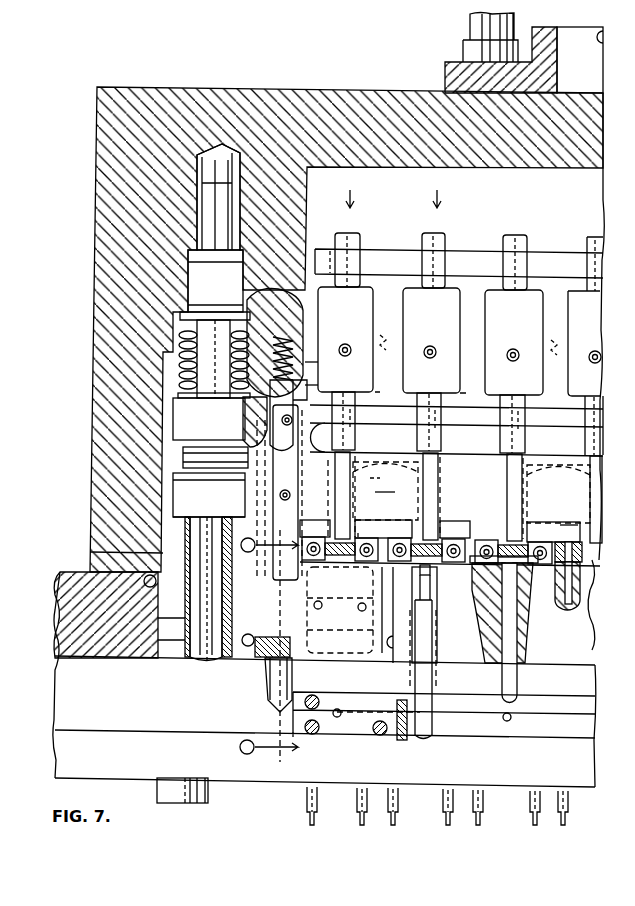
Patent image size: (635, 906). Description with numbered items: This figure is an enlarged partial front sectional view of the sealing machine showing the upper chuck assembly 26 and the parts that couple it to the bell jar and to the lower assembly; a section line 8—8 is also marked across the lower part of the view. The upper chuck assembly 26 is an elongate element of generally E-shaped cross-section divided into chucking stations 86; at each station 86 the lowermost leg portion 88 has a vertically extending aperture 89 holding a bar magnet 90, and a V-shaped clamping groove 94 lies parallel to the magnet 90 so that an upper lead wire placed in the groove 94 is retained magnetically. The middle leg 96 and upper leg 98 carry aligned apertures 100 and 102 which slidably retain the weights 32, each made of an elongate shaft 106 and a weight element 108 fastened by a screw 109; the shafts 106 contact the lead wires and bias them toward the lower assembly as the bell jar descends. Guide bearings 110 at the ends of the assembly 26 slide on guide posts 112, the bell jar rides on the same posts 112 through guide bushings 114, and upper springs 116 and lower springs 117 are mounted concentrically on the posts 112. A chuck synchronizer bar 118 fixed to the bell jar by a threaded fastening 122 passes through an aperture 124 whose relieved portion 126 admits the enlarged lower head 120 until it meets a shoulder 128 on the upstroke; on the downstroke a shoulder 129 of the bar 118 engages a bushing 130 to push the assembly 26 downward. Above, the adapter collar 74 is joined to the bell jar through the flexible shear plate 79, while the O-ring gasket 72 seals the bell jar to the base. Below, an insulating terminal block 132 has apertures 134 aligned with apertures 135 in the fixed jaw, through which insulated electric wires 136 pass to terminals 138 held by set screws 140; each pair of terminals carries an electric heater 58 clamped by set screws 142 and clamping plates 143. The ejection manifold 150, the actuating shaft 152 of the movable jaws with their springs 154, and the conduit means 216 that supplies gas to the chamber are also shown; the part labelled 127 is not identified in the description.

The section line 8- 8 is at (269, 646).
The upper chuck assembly 26 is at (385, 482).
The weights 32 is at (553, 338).
The electric heaters 58 is at (360, 538).
The O-ring gasket 72 is at (155, 585).
The adapter collar 74 is at (558, 72).
The flexible shear plate 79 is at (445, 90).
The chucking stations 86 is at (392, 188).
The lowermost leg portion 88 is at (368, 455).
The vertically extending aperture 89 is at (389, 466).
The bar magnet 90 is at (471, 491).
The V-shaped clamping groove 94 is at (336, 491).
The middle leg 96 is at (460, 414).
The upper leg 98 is at (462, 262).
The apertures 100 is at (355, 413).
The apertures 102 is at (365, 262).
The elongate shaft 106 is at (350, 232).
The weight element 108 is at (462, 388).
The screw 109 is at (594, 351).
The guide bearings 110 is at (178, 472).
The guide posts 112 is at (222, 218).
The guide bushings 114 is at (188, 300).
The upper springs 116 is at (180, 367).
The lower springs 117 is at (96, 553).
The chuck synchronizer bar 118 is at (252, 525).
The enlarged lower head 120 is at (238, 580).
The threaded fastening 122 is at (316, 332).
The aperture 124 is at (242, 411).
The relieved portion 126 is at (250, 490).
The cam 127 is at (262, 302).
The shoulder 128 is at (244, 442).
The shoulder 129 is at (300, 358).
The bushing 130 is at (300, 386).
The insulating terminal block 132 is at (596, 618).
The apertures 134 is at (584, 578).
The apertures 135 is at (552, 602).
The insulated electric wires 136 is at (570, 810).
The terminal 138 is at (582, 524).
The set screws 140 is at (584, 552).
The set screws 142 is at (467, 541).
The clamping plates 143 is at (414, 540).
The manifold 150 is at (278, 709).
The actuating shaft 152 is at (400, 640).
The springs 154 is at (345, 592).
The conduit means 216 is at (212, 800).